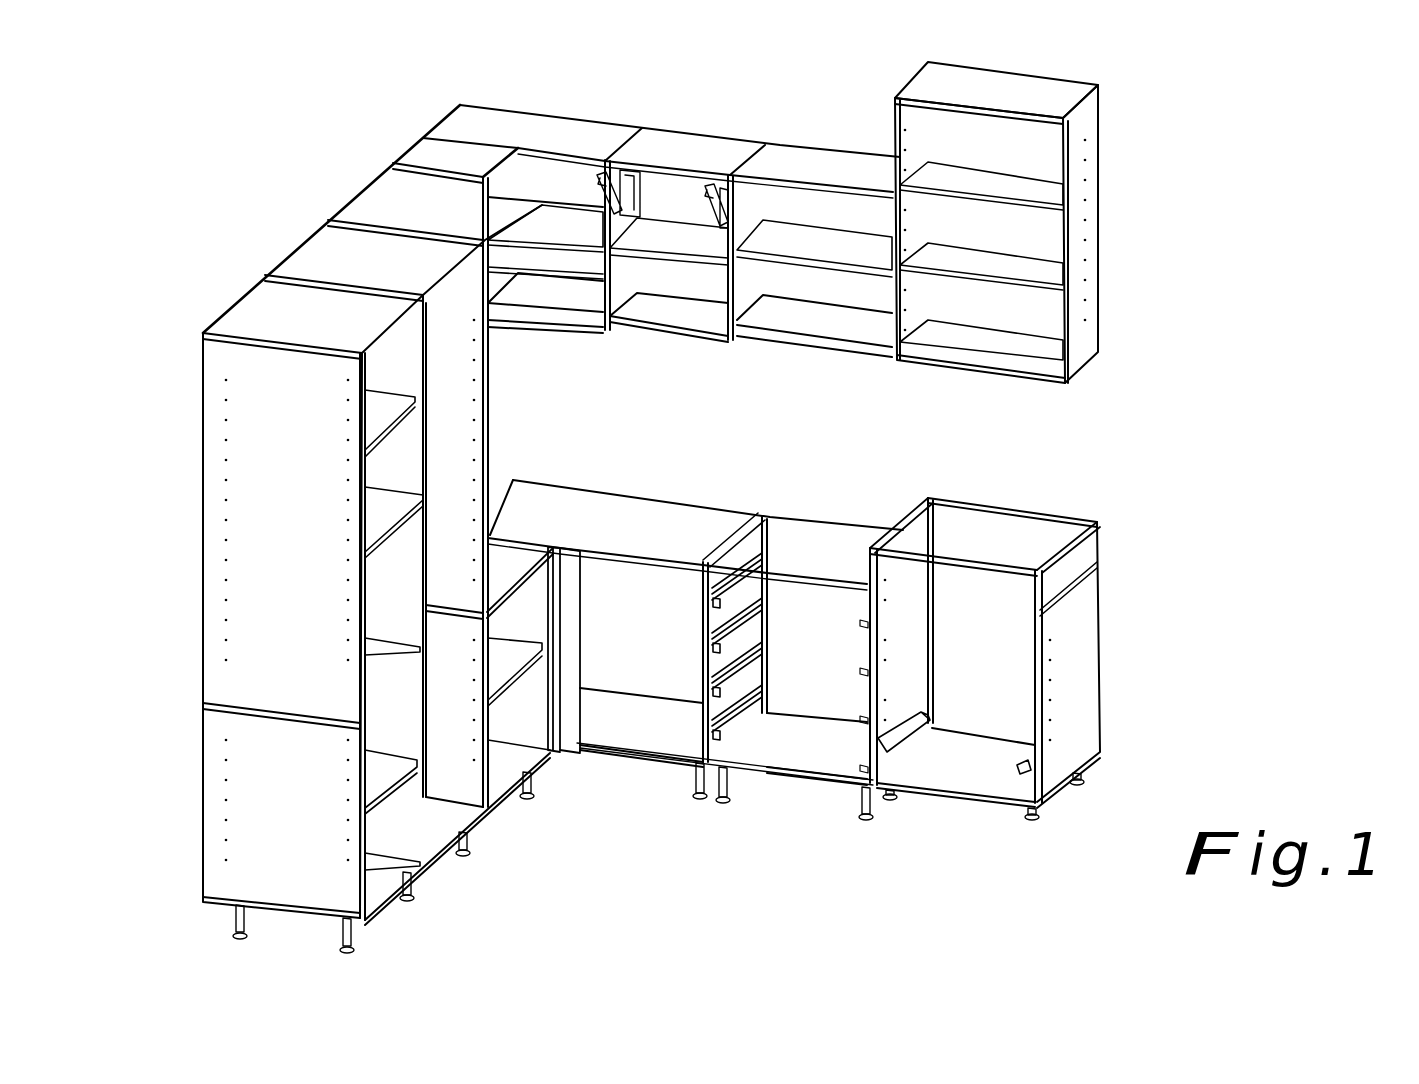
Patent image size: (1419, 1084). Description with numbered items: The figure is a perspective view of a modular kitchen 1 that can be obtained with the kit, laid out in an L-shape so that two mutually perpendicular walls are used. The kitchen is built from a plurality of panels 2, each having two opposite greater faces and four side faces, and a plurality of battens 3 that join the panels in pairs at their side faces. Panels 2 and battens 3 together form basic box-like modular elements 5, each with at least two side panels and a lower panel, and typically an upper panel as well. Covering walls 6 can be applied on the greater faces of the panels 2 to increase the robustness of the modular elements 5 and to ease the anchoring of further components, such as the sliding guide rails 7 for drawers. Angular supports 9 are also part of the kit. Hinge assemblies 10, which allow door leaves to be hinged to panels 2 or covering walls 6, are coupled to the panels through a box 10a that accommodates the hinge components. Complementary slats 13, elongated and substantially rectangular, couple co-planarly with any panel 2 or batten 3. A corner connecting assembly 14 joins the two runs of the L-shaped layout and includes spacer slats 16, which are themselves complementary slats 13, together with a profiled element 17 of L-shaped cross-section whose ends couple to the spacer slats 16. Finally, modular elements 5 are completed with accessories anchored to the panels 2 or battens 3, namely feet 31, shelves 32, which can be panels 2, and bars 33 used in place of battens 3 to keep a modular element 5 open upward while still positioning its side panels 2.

The modular kitchen 1 is at (1273, 215).
The panel 2 is at (1035, 90).
The batten 3 is at (433, 168).
The modular element 5 is at (463, 432).
The covering wall 6 is at (400, 585).
The sliding guide rail 7 is at (770, 583).
The angular support 9 is at (898, 740).
The hinge assembly 10 is at (597, 168).
The box 10a is at (632, 200).
The complementary slat 13 is at (1067, 572).
The corner connecting assembly 14 is at (550, 538).
The spacer slat 16 is at (585, 588).
The profiled element 17 is at (570, 637).
The foot 31 is at (237, 922).
The shelf 32 is at (378, 422).
The bar 33 is at (983, 567).